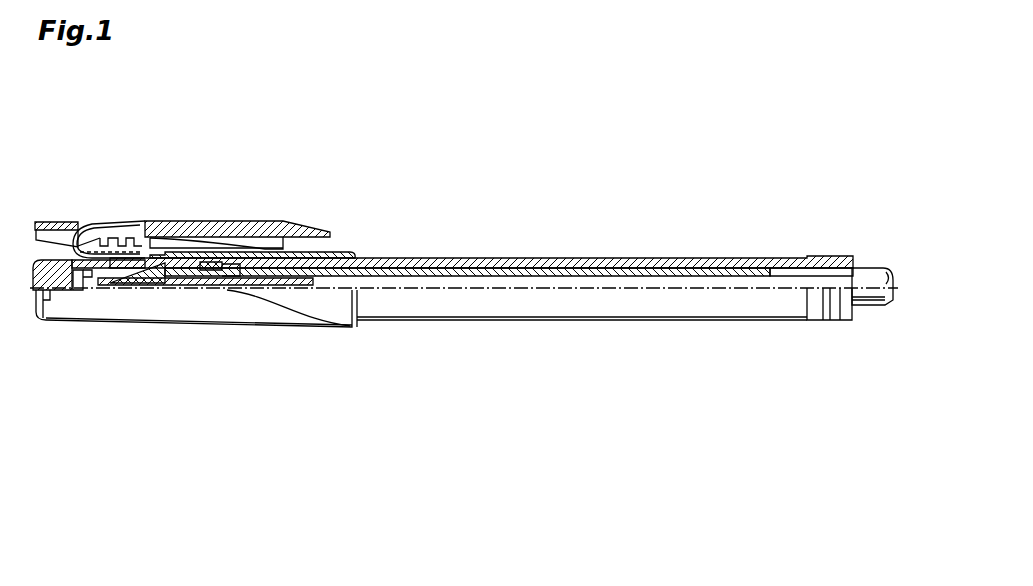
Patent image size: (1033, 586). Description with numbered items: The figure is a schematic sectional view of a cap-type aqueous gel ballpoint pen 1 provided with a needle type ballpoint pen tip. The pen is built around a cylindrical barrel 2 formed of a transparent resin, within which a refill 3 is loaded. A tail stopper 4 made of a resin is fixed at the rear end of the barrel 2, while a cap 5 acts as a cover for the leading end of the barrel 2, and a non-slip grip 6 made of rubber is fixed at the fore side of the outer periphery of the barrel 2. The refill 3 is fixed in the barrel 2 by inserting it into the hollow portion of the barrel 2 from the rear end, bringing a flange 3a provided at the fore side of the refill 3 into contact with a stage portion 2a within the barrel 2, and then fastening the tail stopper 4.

The aqueous gel ballpoint pen 1 is at (704, 179).
The barrel 2 is at (640, 259).
The stage portion 2a is at (208, 264).
The refill 3 is at (437, 272).
The flange 3a is at (215, 273).
The tail stopper 4 is at (865, 266).
The cap 5 is at (212, 312).
The non-slip grip 6 is at (337, 252).